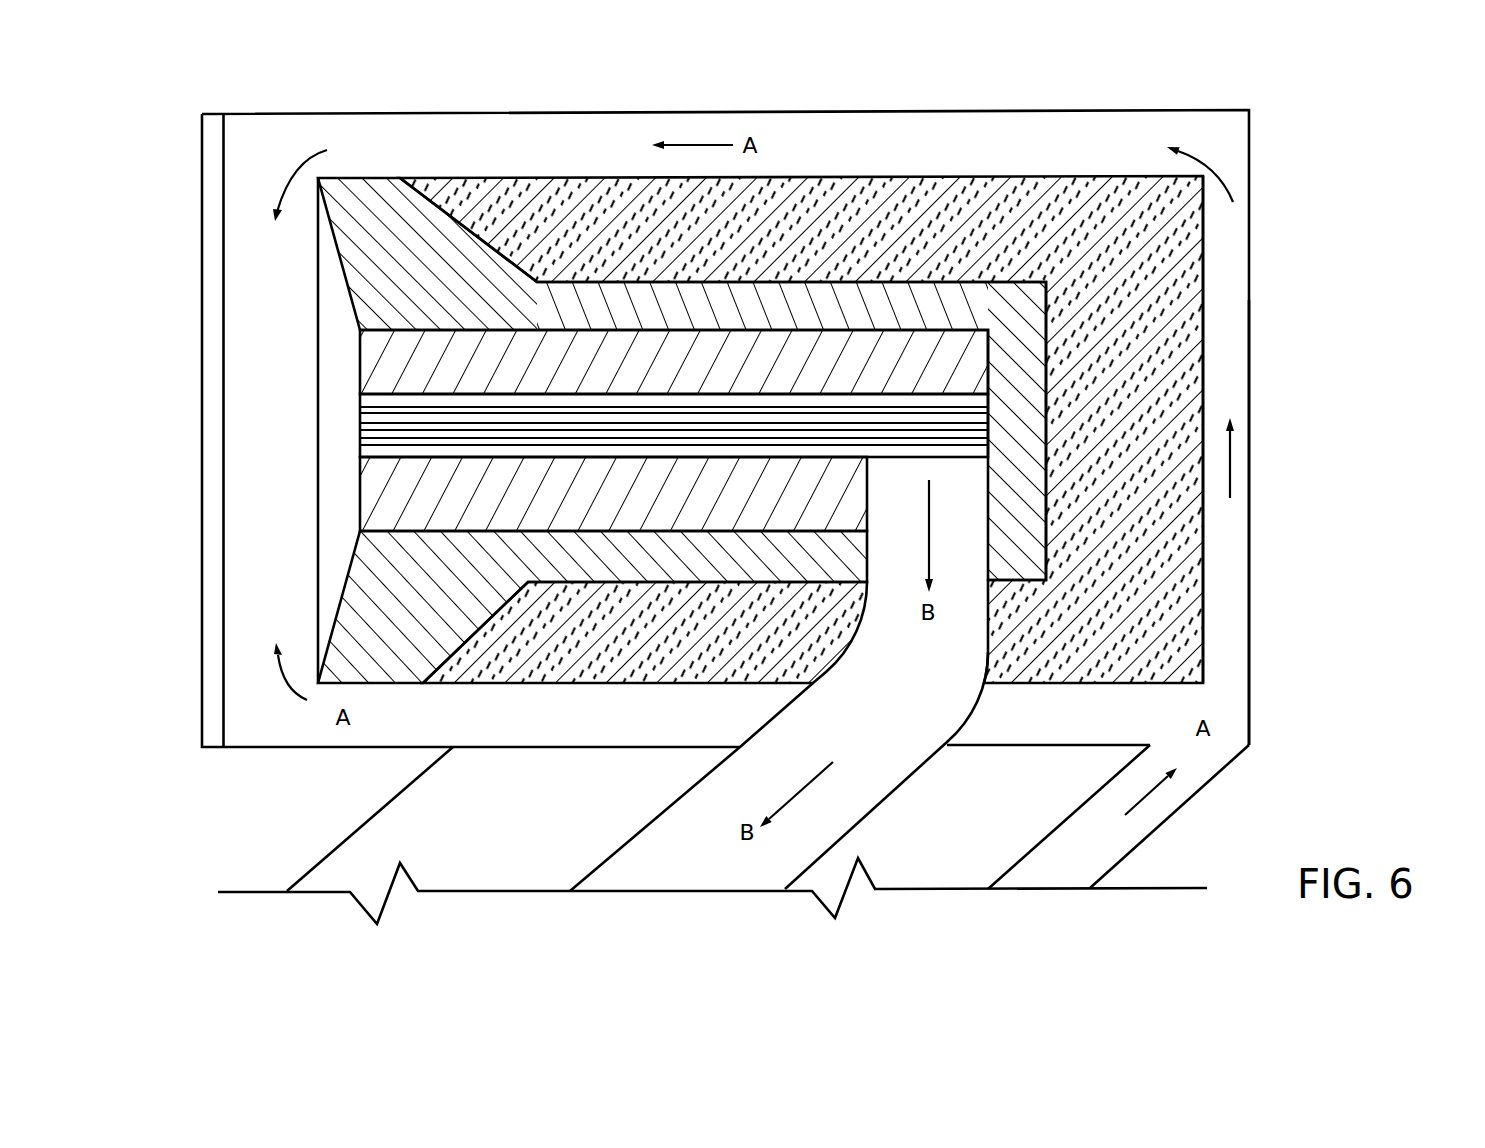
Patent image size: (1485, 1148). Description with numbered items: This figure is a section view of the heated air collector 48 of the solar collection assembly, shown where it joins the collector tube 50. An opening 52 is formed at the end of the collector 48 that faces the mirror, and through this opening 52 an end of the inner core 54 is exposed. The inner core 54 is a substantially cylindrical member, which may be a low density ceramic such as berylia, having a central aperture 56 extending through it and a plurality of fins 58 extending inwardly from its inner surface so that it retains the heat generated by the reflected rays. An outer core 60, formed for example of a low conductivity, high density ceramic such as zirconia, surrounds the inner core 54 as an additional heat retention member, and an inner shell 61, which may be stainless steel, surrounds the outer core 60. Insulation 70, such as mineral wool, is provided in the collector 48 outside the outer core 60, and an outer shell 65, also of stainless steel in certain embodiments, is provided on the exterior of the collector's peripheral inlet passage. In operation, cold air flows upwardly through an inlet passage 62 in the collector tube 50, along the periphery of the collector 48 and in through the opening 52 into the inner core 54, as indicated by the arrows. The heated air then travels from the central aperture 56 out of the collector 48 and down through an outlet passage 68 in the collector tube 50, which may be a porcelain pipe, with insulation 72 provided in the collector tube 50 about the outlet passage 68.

The heated air collector 48 is at (1100, 100).
The collector tube 50 is at (927, 843).
The opening 52 is at (243, 578).
The inner core 54 is at (365, 367).
The central aperture 56 is at (365, 452).
The fins 58 is at (365, 420).
The outer core 60 is at (382, 187).
The inner shell 61 is at (1204, 366).
The inlet passage 62 is at (1127, 849).
The outer shell 65 is at (1251, 540).
The outlet passage 68 is at (662, 841).
The insulation 70 is at (888, 187).
The insulation 72 is at (425, 845).